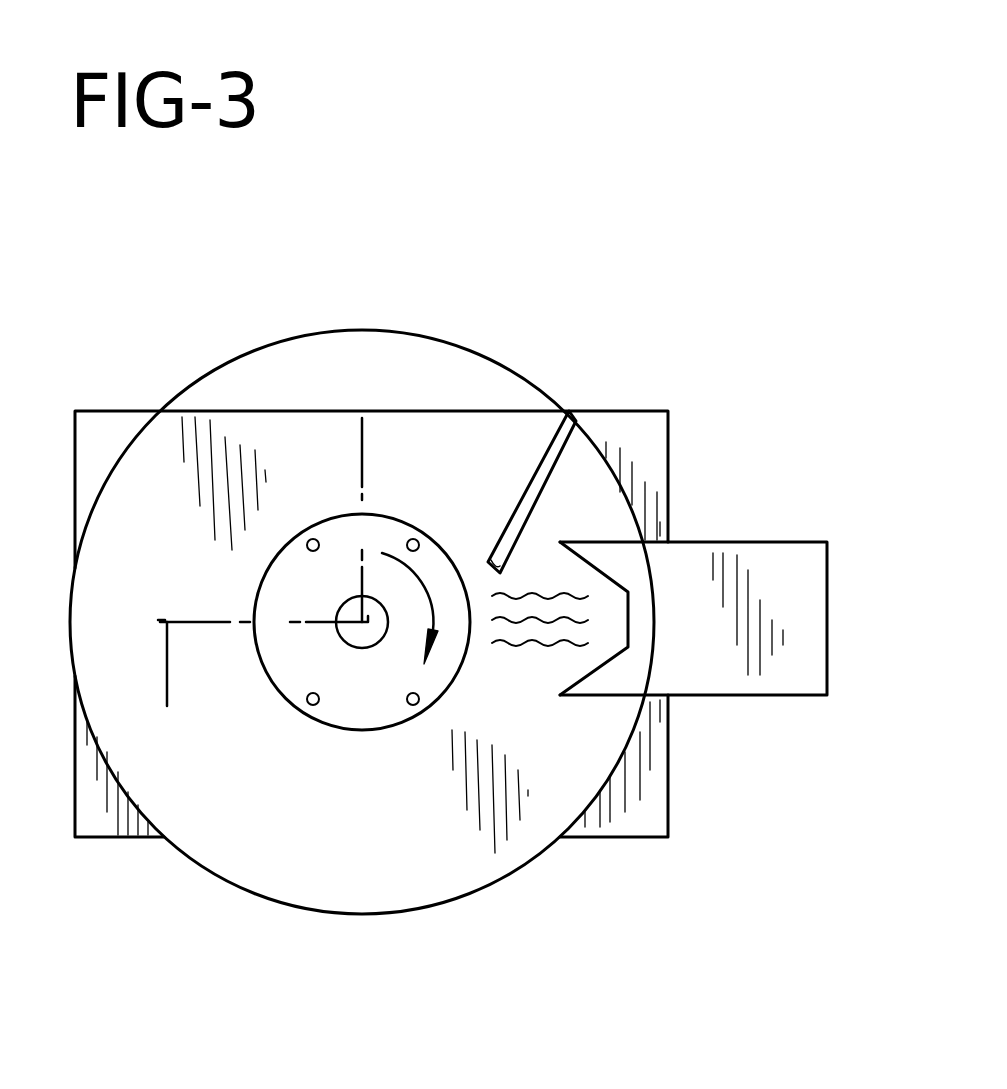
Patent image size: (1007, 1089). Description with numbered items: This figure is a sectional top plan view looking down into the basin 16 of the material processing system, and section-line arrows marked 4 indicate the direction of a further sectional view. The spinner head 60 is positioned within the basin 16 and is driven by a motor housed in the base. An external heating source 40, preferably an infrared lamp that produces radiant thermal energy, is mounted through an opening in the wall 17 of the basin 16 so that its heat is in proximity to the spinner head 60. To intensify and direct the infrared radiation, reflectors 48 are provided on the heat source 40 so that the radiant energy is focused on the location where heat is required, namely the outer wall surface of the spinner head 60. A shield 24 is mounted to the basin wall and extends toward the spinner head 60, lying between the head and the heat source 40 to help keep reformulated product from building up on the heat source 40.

The basin 16 is at (206, 377).
The wall 17 is at (630, 494).
The shield 24 is at (573, 447).
The external heating source 40 is at (732, 697).
The reflectors 48 is at (593, 568).
The spinner head 60 is at (345, 730).
The section line for FIG. 4 is at (400, 430).